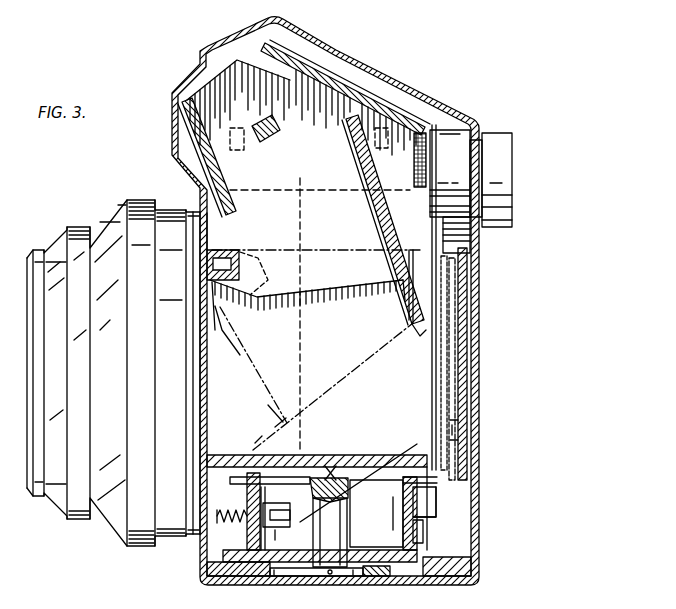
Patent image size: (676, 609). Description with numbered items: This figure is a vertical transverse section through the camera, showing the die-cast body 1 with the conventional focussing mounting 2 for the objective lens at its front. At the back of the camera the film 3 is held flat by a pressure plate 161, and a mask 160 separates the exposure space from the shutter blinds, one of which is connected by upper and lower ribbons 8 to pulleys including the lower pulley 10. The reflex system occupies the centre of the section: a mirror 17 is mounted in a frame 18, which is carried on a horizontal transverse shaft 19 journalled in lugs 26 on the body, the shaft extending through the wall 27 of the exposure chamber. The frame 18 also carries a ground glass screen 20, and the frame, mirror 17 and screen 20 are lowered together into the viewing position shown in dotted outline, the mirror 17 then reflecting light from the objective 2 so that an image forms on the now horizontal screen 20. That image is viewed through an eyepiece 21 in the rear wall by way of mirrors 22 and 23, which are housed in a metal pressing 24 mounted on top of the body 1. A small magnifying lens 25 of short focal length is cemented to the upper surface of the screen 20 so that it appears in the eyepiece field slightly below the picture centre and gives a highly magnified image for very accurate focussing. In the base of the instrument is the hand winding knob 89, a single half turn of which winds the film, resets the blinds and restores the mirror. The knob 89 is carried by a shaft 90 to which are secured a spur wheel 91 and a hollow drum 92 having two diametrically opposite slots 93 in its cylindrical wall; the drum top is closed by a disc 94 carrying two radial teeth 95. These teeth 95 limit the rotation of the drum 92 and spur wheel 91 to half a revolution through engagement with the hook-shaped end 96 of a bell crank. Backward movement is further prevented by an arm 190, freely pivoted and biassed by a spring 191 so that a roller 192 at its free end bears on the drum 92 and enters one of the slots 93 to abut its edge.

The die-cast body 1 is at (458, 568).
The focussing mounting 2 is at (114, 226).
The film 3 is at (449, 330).
The ribbons 8 is at (442, 242).
The lower pulley 10 is at (436, 515).
The mirror 17 is at (380, 228).
The frame 18 is at (335, 276).
The horizontal transverse shaft 19 is at (238, 283).
The ground glass screen 20 is at (303, 256).
The eyepiece 21 is at (496, 180).
The mirror 22 is at (196, 138).
The mirror 23 is at (392, 108).
The metal pressing 24 is at (216, 47).
The small magnifying lens 25 is at (265, 125).
The lugs 26 is at (215, 318).
The wall of the exposure chamber 27 is at (405, 362).
The hand winding knob 89 is at (425, 535).
The shaft 90 is at (430, 456).
The spur wheel 91 is at (415, 551).
The hollow drum 92 is at (262, 537).
The slots 93 is at (384, 462).
The disc 94 is at (393, 508).
The radial teeth 95 is at (250, 478).
The hook-shaped end 96 is at (245, 475).
The mask 160 is at (430, 278).
The pressure plate 161 is at (452, 390).
The arm 190 is at (340, 470).
The spring 191 is at (216, 532).
The roller 192 is at (328, 470).